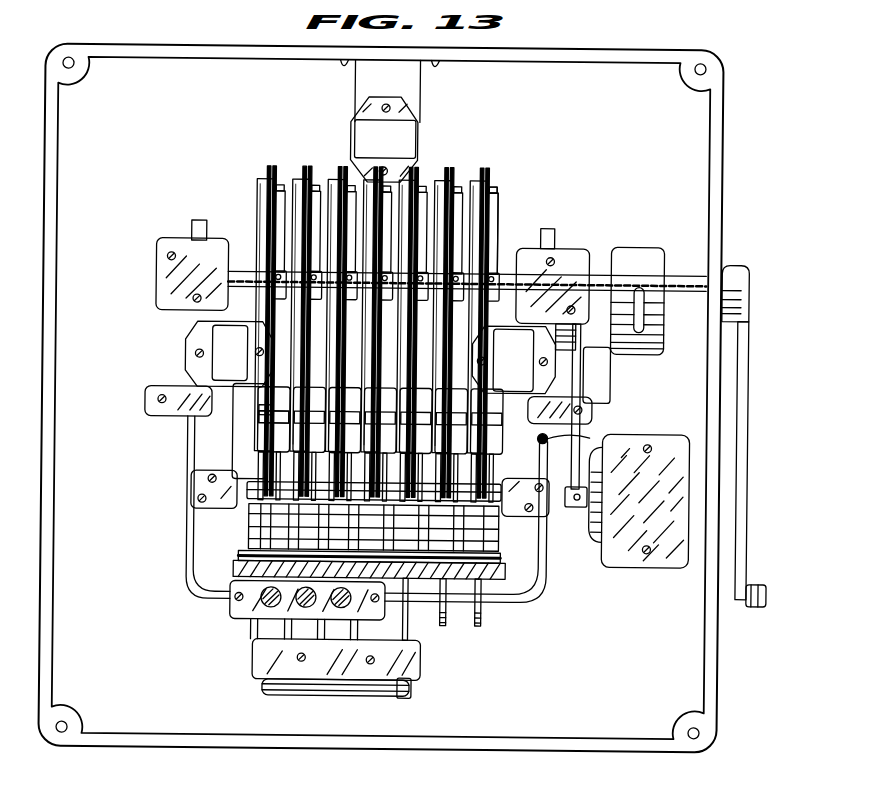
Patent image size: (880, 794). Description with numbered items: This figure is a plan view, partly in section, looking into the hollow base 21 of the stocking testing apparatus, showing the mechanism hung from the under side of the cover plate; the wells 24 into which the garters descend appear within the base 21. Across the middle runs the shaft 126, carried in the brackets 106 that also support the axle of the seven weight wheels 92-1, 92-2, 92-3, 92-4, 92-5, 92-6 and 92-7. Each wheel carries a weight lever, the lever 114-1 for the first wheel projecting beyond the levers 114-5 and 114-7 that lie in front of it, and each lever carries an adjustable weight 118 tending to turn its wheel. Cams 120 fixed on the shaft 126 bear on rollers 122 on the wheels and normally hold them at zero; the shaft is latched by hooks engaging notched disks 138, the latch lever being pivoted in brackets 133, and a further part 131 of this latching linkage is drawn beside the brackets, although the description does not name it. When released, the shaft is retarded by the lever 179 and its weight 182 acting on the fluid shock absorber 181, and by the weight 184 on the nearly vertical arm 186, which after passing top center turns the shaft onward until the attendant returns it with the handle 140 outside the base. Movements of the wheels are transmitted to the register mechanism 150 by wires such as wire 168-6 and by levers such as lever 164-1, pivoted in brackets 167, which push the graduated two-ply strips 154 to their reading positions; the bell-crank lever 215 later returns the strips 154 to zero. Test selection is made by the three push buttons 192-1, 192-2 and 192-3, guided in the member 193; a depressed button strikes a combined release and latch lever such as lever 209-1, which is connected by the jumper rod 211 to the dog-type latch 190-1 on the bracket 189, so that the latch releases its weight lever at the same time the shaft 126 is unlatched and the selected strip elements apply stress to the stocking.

The hollow base 21 is at (723, 155).
The wells 24 is at (418, 118).
The weight wheel 92-1 is at (410, 185).
The weight wheel 92-2 is at (372, 170).
The weight wheel 92-3 is at (338, 172).
The weight wheel 92-4 is at (301, 170).
The weight wheel 92-5 is at (447, 172).
The weight wheel 92-6 is at (264, 172).
The weight wheel 92-7 is at (485, 172).
The brackets 106 is at (155, 292).
The weight 118 is at (235, 445).
The cams 120 is at (496, 222).
The rollers 122 is at (496, 196).
The shaft 126 is at (690, 272).
The ball joint 131 is at (552, 437).
The brackets 133 is at (145, 405).
The disk 138 is at (194, 223).
The handle 140 is at (750, 480).
The register mechanism 150 is at (538, 600).
The two-ply arcuate strip 154 is at (262, 410).
The lever 164-1 is at (266, 515).
The brackets 167 is at (192, 493).
The wire 168-6 is at (257, 420).
The lever 179 is at (575, 483).
The fluid type shock absorber 181 is at (670, 460).
The weight 182 is at (600, 390).
The weight 184 is at (612, 360).
The arm 186 is at (641, 284).
The bracket 189 is at (425, 680).
The latch 190-1 is at (408, 700).
The push button 192-1 is at (268, 602).
The push button 192-2 is at (305, 604).
The push button 192-3 is at (340, 606).
The member 193 is at (232, 597).
The combined release and latch lever 209-1 is at (270, 630).
The jumper rod 211 is at (338, 697).
The bell-crank lever 215 is at (275, 498).
The weight lever 114-1 is at (410, 634).
The weight lever 114-5 is at (484, 625).
The weight lever 114-7 is at (450, 620).